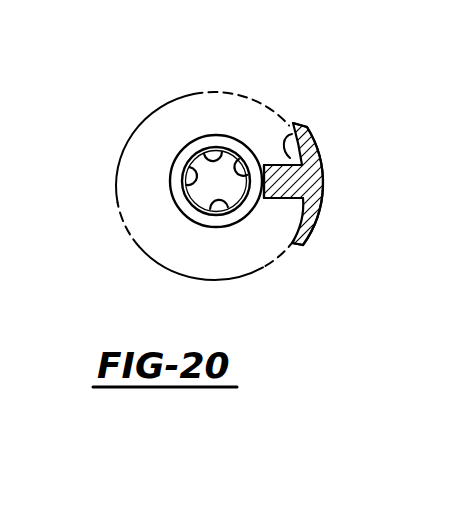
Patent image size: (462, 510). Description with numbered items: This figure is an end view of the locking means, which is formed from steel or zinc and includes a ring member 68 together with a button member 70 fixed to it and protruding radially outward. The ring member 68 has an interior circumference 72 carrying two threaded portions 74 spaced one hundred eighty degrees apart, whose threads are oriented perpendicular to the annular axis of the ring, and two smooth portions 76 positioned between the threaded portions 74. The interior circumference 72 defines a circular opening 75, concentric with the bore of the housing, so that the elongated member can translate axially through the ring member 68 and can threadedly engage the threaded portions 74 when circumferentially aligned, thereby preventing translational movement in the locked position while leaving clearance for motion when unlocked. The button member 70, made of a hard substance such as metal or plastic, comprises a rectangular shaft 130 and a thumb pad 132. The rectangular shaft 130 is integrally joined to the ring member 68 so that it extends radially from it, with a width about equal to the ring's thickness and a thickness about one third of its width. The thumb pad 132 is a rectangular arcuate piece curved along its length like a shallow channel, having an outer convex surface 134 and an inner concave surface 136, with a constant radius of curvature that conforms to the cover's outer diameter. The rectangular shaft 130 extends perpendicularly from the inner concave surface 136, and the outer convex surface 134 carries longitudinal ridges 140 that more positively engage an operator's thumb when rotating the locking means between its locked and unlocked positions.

The ring member 68 is at (231, 135).
The button member 70 is at (325, 182).
The interior circumference 72 is at (189, 160).
The threaded portions 74 is at (205, 158).
The circular opening 75 is at (207, 200).
The smooth portions 76 is at (242, 164).
The rectangular shaft 130 is at (296, 199).
The thumb pad 132 is at (321, 156).
The outer convex surface 134 is at (310, 233).
The inner concave surface 136 is at (312, 128).
The longitudinal ridges 140 is at (320, 207).